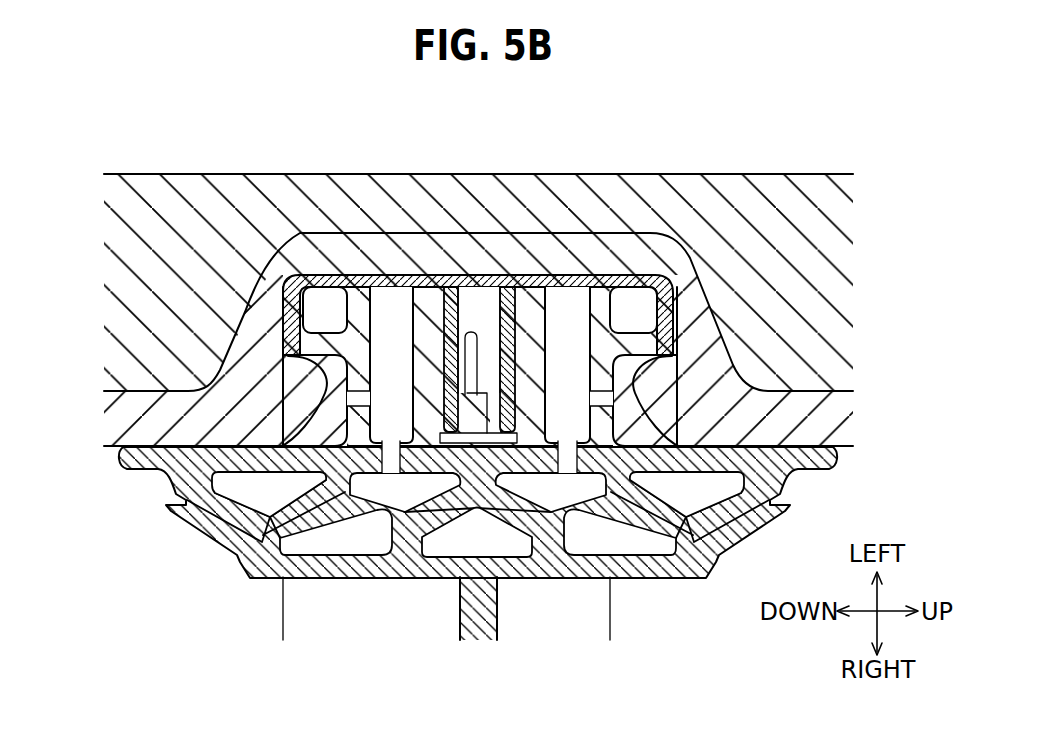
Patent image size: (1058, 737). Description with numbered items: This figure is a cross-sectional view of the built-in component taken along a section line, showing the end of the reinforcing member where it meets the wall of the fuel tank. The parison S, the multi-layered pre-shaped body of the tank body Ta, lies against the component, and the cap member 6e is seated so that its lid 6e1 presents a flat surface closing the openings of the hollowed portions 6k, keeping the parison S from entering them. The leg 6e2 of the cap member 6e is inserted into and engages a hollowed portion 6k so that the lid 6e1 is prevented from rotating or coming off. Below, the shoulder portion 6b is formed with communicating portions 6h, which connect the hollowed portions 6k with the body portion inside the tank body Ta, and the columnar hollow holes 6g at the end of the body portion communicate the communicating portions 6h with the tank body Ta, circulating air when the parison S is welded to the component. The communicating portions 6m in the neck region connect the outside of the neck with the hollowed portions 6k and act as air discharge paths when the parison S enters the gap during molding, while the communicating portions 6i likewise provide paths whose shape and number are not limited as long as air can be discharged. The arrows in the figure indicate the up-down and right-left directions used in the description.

The shoulder portion 6b is at (443, 512).
The cap member 6e is at (633, 287).
The lid 6e1 is at (322, 275).
The leg 6e2 is at (452, 388).
The columnar hollow hole 6g is at (460, 577).
The communicating portion (second communicating portion) 6h is at (360, 402).
The communicating portion 6i is at (510, 290).
The hollowed portion 6k is at (579, 300).
The communicating portion (first communicating portion) 6m is at (408, 512).
The parison S is at (820, 422).
The tank body Ta is at (733, 626).